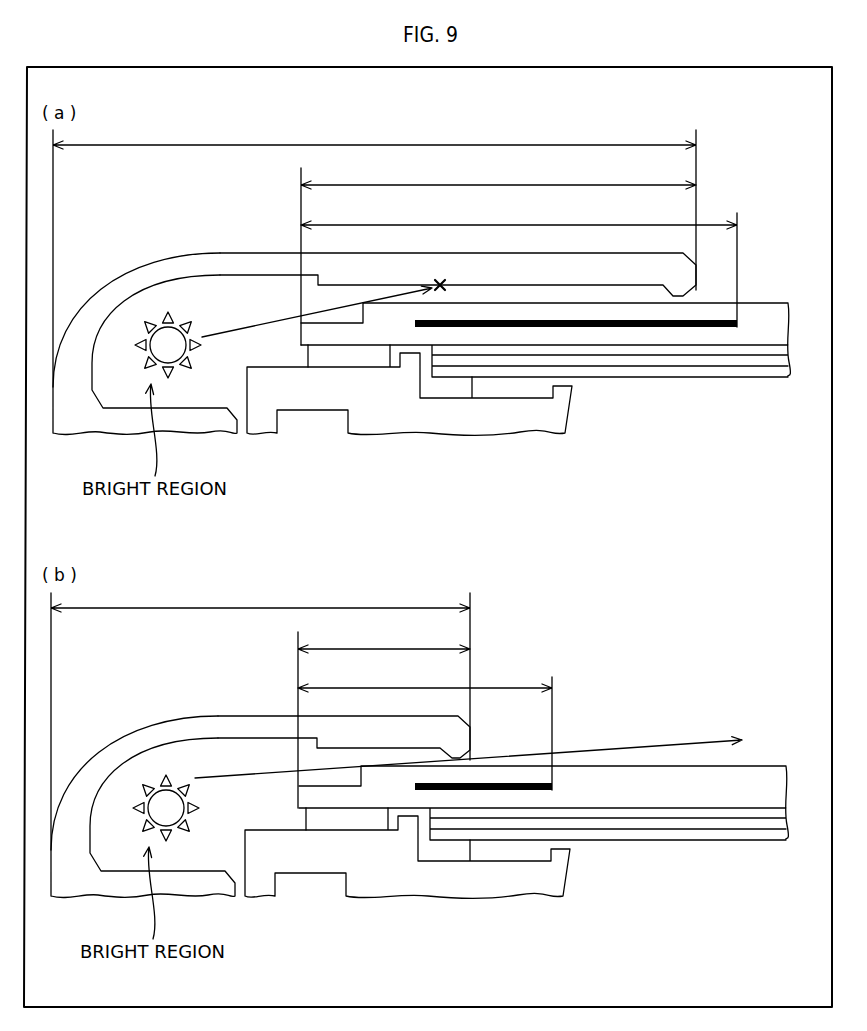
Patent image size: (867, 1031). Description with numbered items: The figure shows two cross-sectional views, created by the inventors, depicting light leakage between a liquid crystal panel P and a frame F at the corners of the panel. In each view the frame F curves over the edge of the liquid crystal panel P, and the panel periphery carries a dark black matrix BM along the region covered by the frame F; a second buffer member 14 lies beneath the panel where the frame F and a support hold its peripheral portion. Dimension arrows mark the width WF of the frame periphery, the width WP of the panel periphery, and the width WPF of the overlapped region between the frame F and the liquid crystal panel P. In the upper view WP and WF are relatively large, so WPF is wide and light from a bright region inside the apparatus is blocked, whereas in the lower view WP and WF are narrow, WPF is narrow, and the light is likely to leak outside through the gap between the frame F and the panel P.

The second buffer member 14 is at (307, 356).
The frame F is at (131, 288).
The liquid crystal panel P is at (789, 323).
The black matrix BM is at (741, 320).
The width of frame periphery WF is at (373, 487).
The width of overlapped region WPF is at (497, 486).
The width of panel periphery WP is at (517, 497).